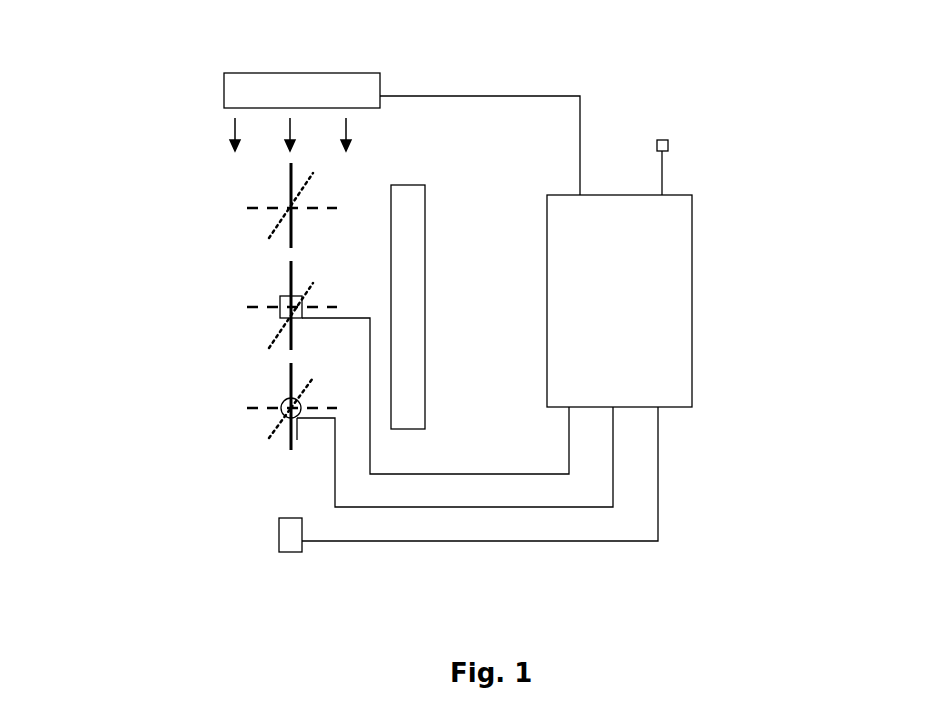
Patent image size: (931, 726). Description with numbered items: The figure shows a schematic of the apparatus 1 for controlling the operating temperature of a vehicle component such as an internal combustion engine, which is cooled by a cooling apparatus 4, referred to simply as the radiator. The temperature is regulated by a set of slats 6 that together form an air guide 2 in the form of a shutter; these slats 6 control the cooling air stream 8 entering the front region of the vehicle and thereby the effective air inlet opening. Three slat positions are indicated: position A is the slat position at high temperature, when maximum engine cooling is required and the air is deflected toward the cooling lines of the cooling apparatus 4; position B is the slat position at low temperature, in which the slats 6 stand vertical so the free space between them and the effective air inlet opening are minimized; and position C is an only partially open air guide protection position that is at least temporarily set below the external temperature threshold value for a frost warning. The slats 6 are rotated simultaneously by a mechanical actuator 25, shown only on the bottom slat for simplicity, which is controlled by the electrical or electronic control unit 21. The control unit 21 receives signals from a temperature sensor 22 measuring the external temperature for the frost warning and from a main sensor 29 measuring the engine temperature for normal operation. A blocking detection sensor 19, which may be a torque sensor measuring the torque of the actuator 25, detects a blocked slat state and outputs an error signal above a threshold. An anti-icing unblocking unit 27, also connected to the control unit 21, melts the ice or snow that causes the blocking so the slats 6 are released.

The apparatus 1 is at (535, 54).
The anti-icing unblocking unit 27 is at (300, 85).
The main sensor 29 is at (663, 137).
The control unit 21 is at (680, 283).
The cooling apparatus 4 is at (412, 240).
The air guide 2 is at (224, 218).
The cooling air stream 8 is at (168, 308).
The slats 6 is at (291, 183).
The blocking detection sensor 19 is at (283, 296).
The slat position at high temperature A is at (247, 405).
The slat position at low temperature B is at (291, 445).
The air guide protection position C is at (312, 376).
The actuator 25 is at (297, 440).
The temperature sensor 22 is at (290, 540).